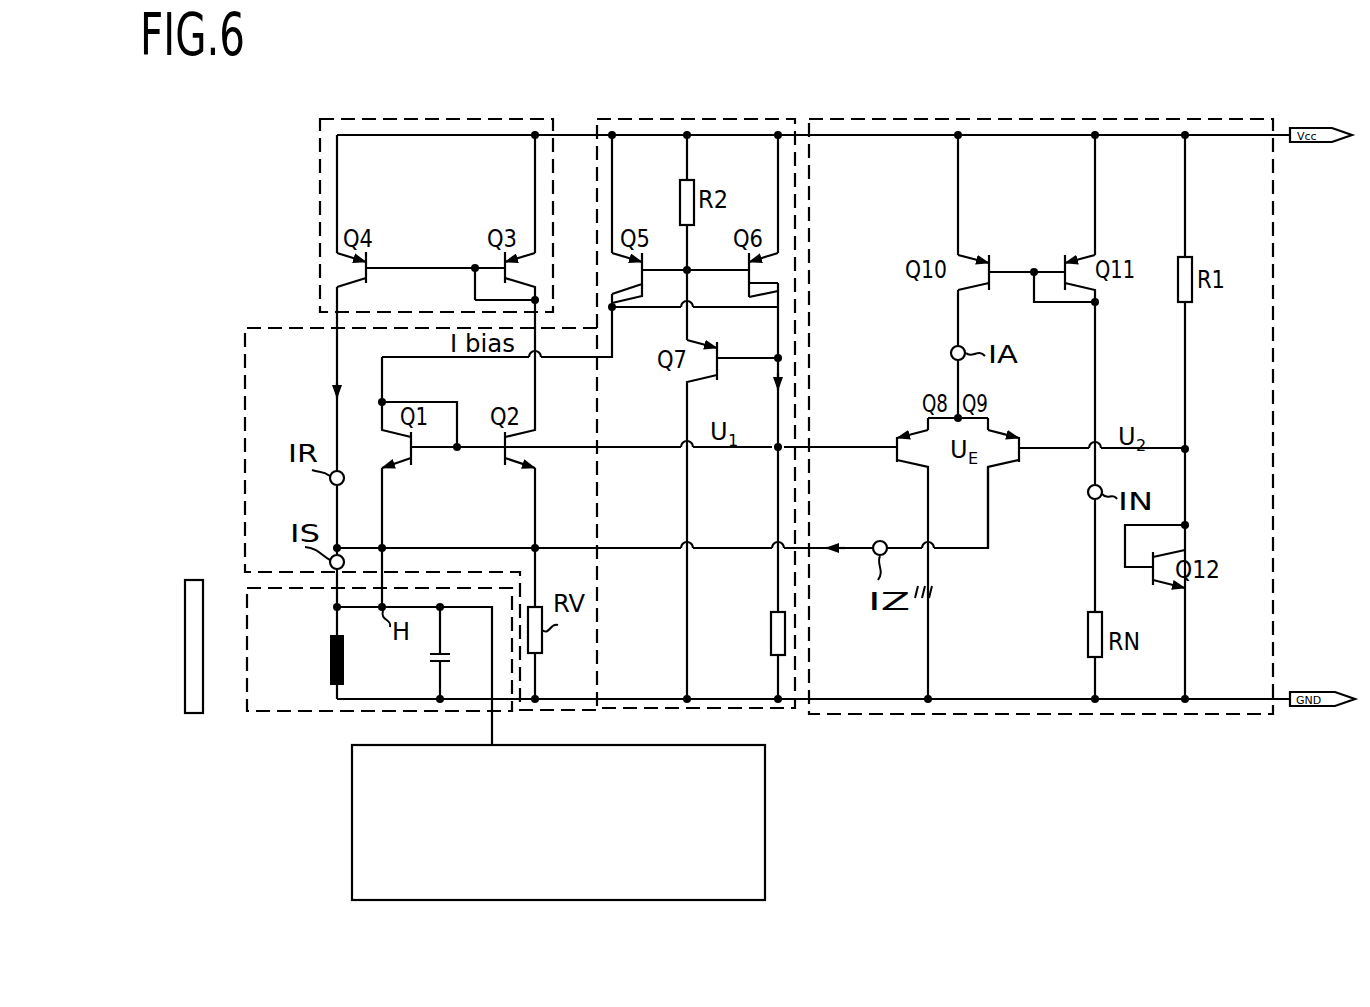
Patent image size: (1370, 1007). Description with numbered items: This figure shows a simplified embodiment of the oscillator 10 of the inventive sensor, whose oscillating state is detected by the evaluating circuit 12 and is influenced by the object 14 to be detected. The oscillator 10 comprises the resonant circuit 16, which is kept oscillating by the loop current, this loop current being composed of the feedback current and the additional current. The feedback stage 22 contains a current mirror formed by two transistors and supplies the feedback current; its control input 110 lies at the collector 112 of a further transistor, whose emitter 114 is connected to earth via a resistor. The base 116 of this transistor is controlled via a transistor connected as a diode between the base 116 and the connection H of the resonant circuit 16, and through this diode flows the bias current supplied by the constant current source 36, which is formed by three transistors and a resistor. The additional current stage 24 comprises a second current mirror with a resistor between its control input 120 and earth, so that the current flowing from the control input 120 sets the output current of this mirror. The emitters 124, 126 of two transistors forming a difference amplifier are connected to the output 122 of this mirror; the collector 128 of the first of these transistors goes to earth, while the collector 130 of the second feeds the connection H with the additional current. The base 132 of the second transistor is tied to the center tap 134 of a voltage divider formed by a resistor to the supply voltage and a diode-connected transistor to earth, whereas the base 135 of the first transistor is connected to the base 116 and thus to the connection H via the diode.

The oscillator 10 is at (895, 110).
The evaluating circuit 12 is at (758, 849).
The object 14 is at (185, 716).
The resonant circuit 16 is at (312, 674).
The feedback stage 22 is at (437, 172).
The additional current stage 24 is at (1019, 176).
The constant current source 36 is at (715, 166).
The control input 110 is at (538, 301).
The collector 112 is at (562, 414).
The emitter 114 is at (540, 466).
The base 116 is at (503, 450).
The control input 120 is at (1097, 306).
The output 122 is at (958, 317).
The emitter 124 is at (922, 432).
The emitter 126 is at (996, 432).
The collector 128 is at (925, 467).
The collector 130 is at (990, 467).
The base 132 is at (1021, 452).
The center tap 134 is at (1188, 452).
The base 135 is at (893, 452).